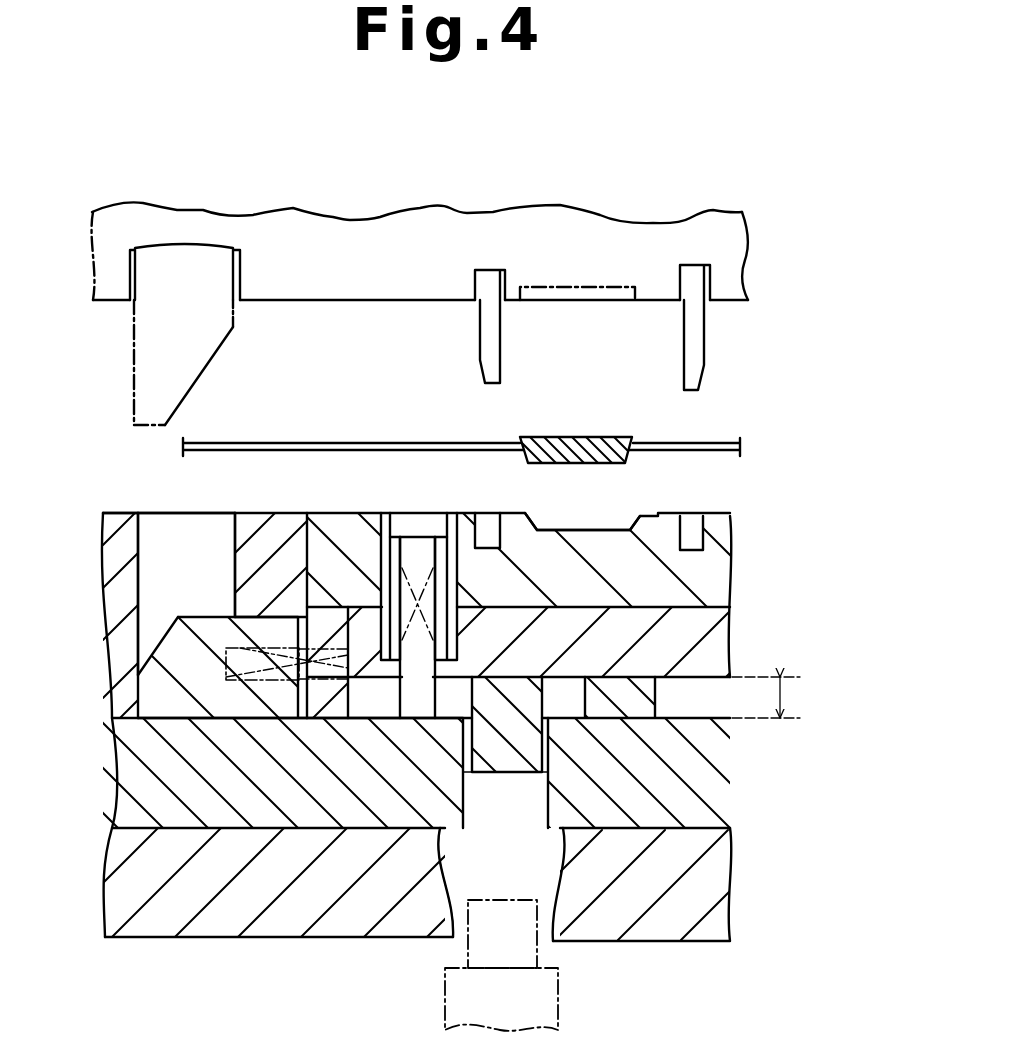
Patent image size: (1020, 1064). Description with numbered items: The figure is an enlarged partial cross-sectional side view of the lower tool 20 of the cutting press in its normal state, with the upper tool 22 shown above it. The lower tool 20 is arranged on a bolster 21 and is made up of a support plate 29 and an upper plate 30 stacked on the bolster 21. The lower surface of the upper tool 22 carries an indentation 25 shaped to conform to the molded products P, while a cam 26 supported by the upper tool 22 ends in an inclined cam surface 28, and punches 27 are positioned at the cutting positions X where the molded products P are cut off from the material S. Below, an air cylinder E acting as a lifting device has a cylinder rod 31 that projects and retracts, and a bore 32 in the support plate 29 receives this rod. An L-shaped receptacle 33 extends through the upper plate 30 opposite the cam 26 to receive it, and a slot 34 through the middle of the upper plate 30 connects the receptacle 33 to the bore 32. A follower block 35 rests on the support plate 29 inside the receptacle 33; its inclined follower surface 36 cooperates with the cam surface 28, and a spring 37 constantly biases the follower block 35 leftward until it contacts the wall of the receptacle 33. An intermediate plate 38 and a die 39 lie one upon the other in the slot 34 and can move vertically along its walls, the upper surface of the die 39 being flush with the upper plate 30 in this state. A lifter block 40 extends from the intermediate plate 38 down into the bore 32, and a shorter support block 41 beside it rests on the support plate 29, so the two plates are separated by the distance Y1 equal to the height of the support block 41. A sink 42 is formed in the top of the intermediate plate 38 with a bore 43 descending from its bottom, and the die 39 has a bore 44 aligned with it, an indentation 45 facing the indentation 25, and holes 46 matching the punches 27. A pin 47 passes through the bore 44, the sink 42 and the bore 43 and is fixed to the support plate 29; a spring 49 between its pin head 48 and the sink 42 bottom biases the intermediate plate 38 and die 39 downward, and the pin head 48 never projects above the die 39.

The lower tool 20 is at (862, 562).
The bolster 21 is at (104, 893).
The upper tool 22 is at (762, 290).
The indentation 25 is at (622, 303).
The cam 26 is at (133, 352).
The punch 27 is at (478, 340).
The inclined cam surface 28 is at (205, 380).
The support plate 29 is at (104, 773).
The upper plate 30 is at (104, 582).
The cylinder rod 31 is at (480, 900).
The bore 32 is at (537, 829).
The L-shaped receptacle 33 is at (153, 514).
The slot 34 is at (312, 530).
The follower block 35 is at (205, 617).
The inclined follower surface 36 is at (163, 640).
The spring 37 is at (313, 682).
The intermediate plate 38 is at (729, 647).
The die 39 is at (729, 562).
The lifter block 40 is at (487, 774).
The support block 41 is at (657, 695).
The sink 42 is at (448, 630).
The bore 43 is at (433, 668).
The bore 44 is at (456, 553).
The indentation 45 is at (540, 530).
The hole 46 is at (488, 522).
The pin 47 is at (400, 576).
The pin head 48 is at (378, 526).
The spring 49 is at (455, 592).
The material S is at (410, 442).
The cutting position X is at (494, 441).
The molded product P is at (582, 437).
The distance Y1 is at (785, 700).
The air cylinder E is at (560, 1013).